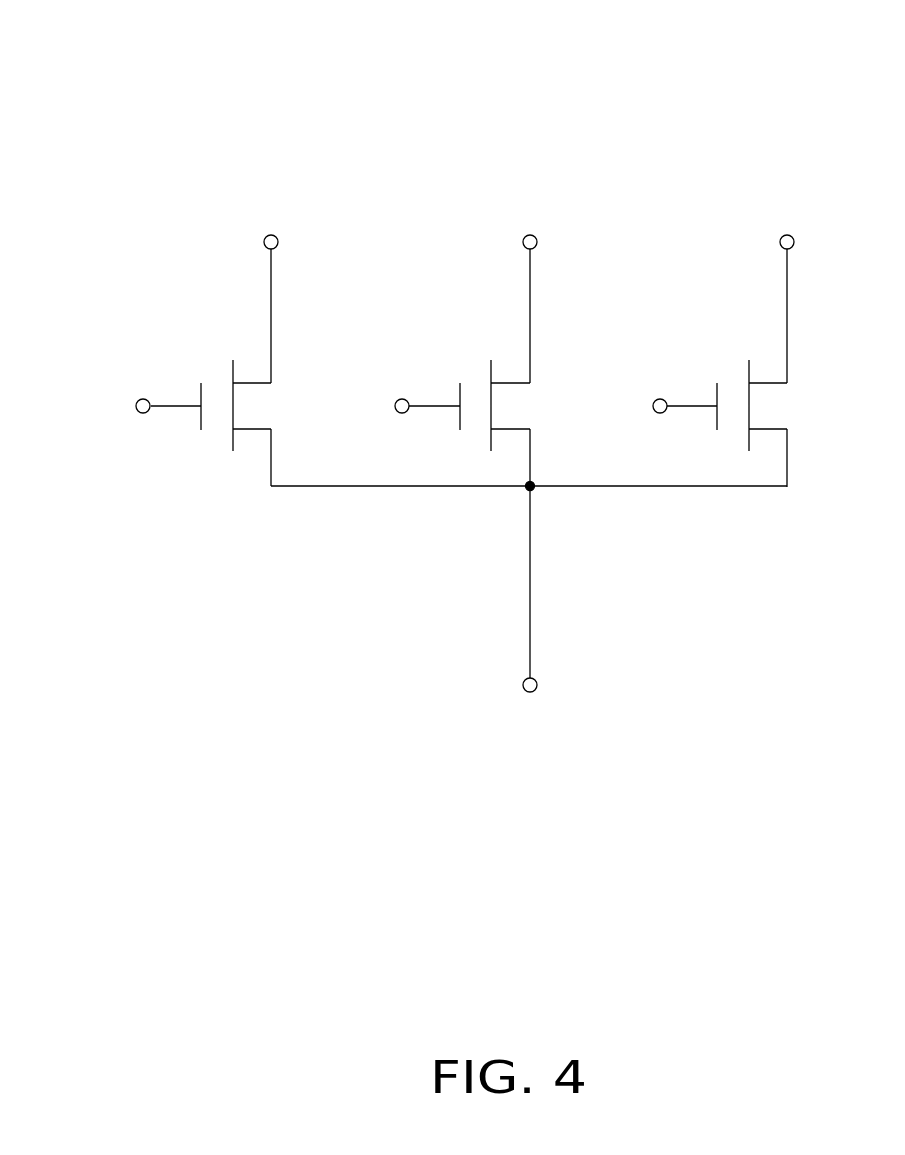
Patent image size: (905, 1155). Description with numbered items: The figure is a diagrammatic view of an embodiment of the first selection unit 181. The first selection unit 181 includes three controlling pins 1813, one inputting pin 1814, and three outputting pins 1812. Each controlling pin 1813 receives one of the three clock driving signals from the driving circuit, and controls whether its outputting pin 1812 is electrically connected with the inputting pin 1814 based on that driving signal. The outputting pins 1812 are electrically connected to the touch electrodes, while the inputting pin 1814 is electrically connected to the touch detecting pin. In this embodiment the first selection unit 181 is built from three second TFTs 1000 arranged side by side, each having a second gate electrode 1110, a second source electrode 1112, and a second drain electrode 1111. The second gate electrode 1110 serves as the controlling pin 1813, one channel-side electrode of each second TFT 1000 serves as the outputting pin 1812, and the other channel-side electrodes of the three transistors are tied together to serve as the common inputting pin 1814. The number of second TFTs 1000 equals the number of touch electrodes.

The first selection unit 181 is at (458, 54).
The outputting pin 1812 is at (270, 235).
The controlling pin 1813 is at (140, 413).
The inputting pin 1814 is at (523, 689).
The second TFT 1000 is at (213, 368).
The second drain electrode 1111 is at (252, 382).
The second source electrode 1112 is at (252, 431).
The second gate electrode 1110 is at (177, 407).